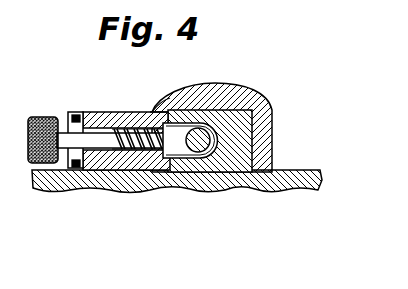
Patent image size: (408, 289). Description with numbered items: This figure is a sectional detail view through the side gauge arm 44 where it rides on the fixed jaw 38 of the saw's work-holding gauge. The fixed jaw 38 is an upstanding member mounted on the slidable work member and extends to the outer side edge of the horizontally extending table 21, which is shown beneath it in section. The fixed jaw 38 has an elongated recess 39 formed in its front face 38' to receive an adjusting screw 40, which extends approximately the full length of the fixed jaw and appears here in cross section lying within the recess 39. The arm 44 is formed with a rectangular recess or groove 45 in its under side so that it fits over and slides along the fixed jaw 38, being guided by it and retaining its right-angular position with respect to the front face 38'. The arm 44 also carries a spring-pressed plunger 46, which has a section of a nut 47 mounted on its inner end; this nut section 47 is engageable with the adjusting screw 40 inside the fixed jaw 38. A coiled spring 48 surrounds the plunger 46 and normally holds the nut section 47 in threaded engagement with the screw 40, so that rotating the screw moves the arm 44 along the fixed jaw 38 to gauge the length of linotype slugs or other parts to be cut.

The table 21 is at (297, 177).
The fixed jaw 38 is at (226, 122).
The front face of the fixed jaw 38' is at (138, 88).
The side gauge arm 44 is at (157, 110).
The rectangular recess 45 is at (254, 134).
The spring-pressed plunger 46 is at (117, 122).
The nut section 47 is at (168, 168).
The coiled spring 48 is at (118, 165).
The elongated recess 39 is at (188, 160).
The adjusting screw 40 is at (206, 160).